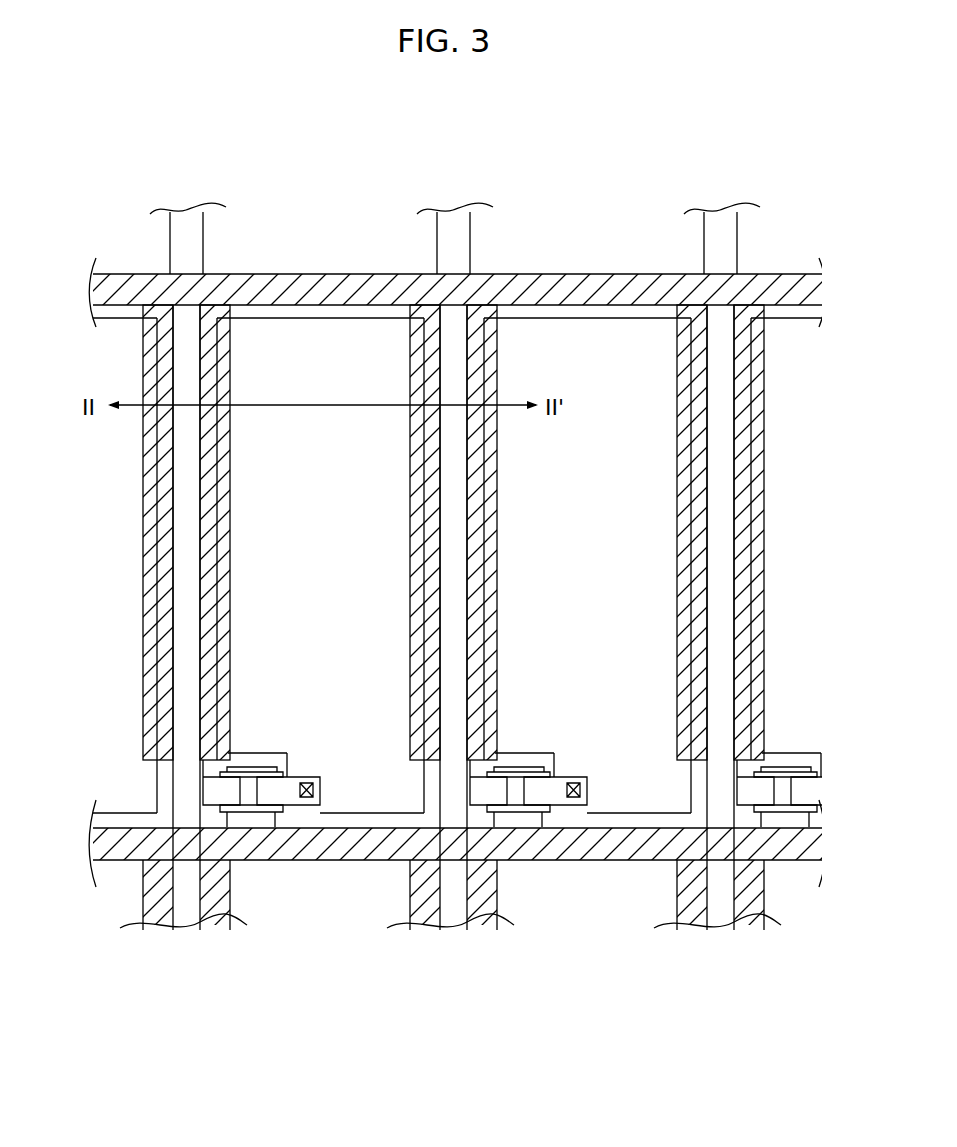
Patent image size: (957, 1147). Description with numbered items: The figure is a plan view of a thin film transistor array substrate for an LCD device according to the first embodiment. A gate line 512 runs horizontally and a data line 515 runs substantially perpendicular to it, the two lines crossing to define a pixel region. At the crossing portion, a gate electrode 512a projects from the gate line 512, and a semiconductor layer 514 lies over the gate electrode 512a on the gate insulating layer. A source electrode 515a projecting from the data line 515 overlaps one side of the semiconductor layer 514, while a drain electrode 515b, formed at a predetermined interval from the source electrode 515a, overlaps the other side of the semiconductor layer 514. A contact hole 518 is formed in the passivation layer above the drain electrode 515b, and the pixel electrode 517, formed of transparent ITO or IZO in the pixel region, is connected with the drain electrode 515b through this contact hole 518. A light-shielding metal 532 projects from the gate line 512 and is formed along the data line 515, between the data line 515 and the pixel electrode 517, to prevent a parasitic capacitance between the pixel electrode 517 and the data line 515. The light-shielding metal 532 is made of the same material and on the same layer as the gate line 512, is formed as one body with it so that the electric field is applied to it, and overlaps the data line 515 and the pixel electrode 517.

The pixel electrode 517 is at (327, 326).
The gate line 512 is at (360, 830).
The gate electrode 512a is at (233, 765).
The semiconductor layer 514 is at (248, 797).
The data line 515 is at (183, 636).
The source electrode 515a is at (218, 795).
The drain electrode 515b is at (307, 777).
The contact hole 518 is at (307, 806).
The light-shielding metal 532 is at (155, 460).